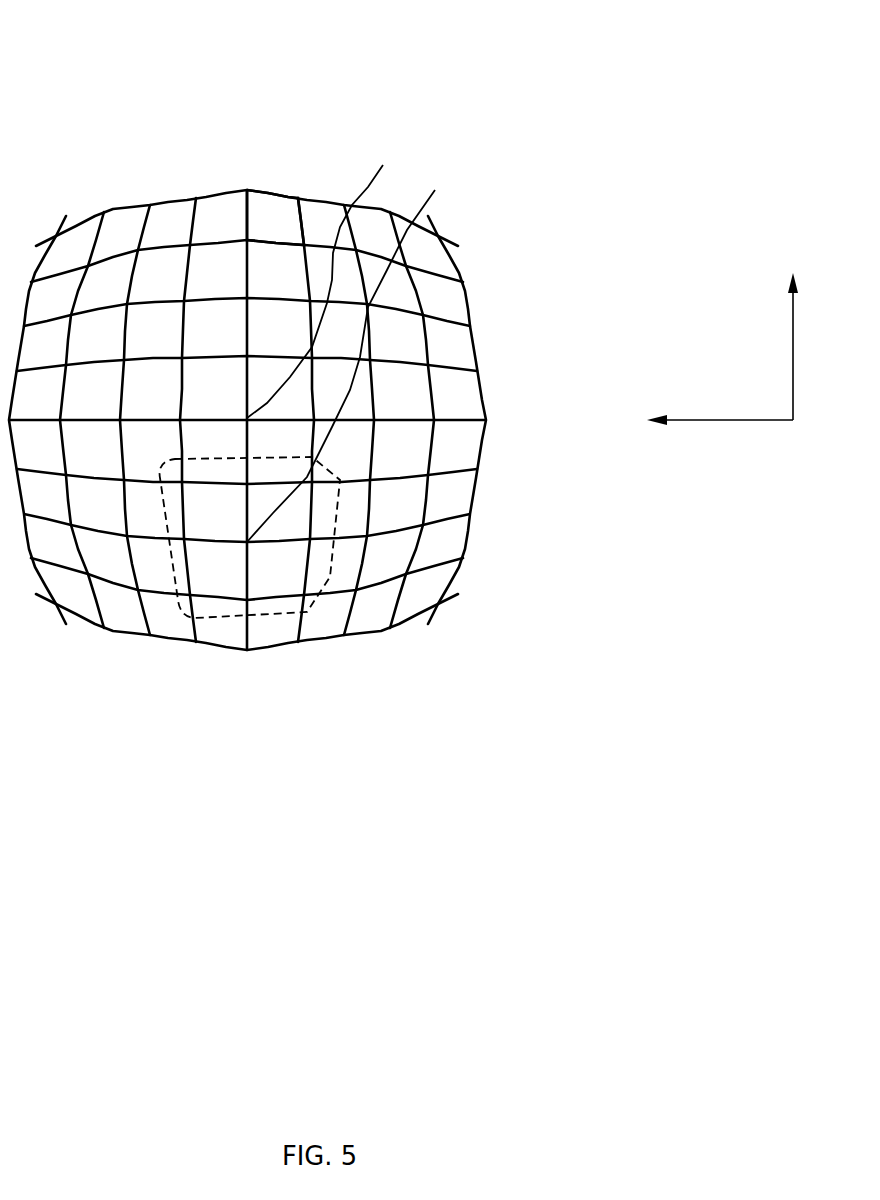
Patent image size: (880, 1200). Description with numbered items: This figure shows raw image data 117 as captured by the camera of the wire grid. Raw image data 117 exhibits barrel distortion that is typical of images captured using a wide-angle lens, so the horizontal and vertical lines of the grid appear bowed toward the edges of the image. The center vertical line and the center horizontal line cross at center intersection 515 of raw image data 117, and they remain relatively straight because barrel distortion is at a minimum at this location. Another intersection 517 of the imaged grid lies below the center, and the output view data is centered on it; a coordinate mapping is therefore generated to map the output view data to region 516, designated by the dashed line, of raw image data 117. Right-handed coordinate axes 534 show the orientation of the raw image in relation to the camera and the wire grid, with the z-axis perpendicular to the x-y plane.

The raw image data 117 is at (243, 64).
The center intersection 515 is at (322, 278).
The intersection 517 is at (359, 351).
The region 516 is at (333, 572).
The right-handed coordinate axes 534 is at (730, 292).